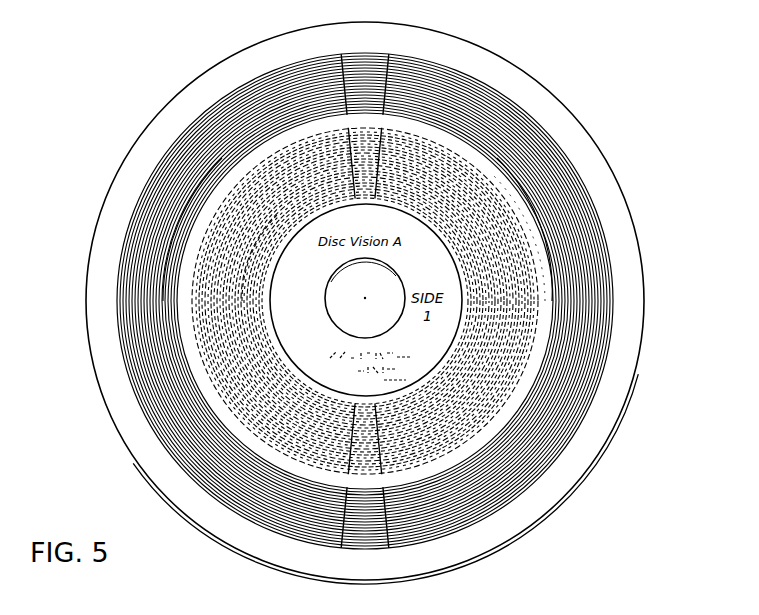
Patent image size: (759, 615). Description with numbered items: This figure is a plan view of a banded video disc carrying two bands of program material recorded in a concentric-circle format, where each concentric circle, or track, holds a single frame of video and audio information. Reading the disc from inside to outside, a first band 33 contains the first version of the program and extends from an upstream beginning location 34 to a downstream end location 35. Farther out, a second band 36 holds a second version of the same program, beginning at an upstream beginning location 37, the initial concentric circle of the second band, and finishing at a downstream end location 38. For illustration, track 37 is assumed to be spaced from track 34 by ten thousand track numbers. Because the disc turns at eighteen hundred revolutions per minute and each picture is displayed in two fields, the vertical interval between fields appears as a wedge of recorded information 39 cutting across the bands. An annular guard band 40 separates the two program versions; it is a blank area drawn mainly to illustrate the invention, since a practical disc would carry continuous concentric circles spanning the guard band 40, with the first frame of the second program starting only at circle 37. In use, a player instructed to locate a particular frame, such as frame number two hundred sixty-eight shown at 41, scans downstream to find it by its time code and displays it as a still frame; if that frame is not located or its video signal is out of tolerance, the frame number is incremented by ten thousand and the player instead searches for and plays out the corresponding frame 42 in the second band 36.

The first band 33 is at (490, 198).
The upstream beginning location 34 is at (465, 137).
The downstream end location 35 is at (482, 172).
The second band 36 is at (583, 287).
The upstream beginning location 37 is at (538, 215).
The downstream end location 38 is at (608, 250).
The wedge of recorded information 39 is at (410, 78).
The annular guard band 40 is at (525, 387).
The frame number 268 41 is at (245, 265).
The frame number 10,268 42 is at (163, 288).